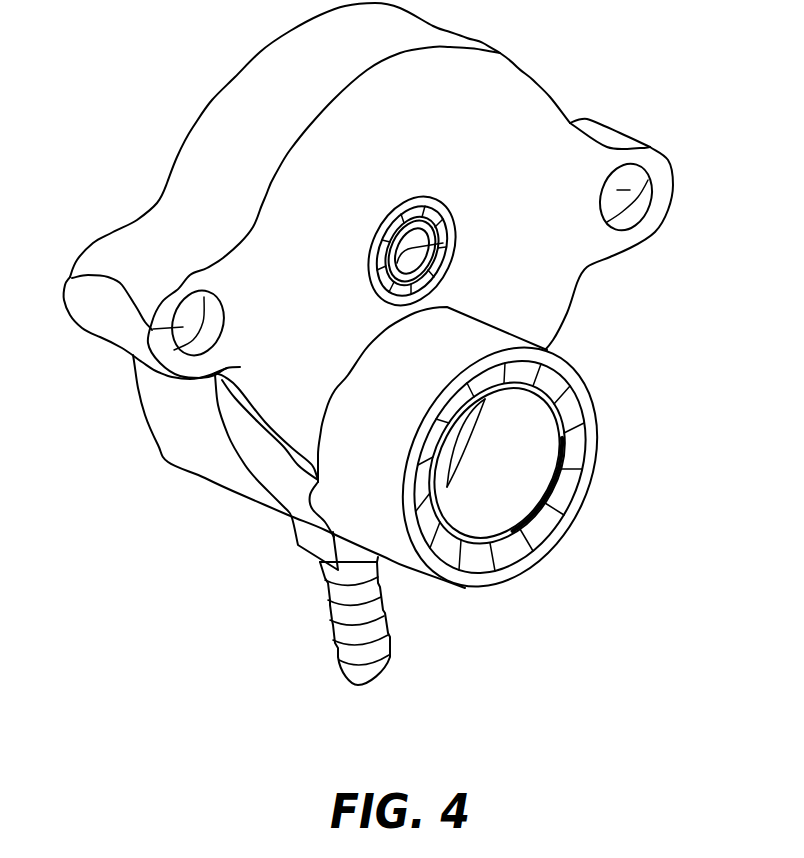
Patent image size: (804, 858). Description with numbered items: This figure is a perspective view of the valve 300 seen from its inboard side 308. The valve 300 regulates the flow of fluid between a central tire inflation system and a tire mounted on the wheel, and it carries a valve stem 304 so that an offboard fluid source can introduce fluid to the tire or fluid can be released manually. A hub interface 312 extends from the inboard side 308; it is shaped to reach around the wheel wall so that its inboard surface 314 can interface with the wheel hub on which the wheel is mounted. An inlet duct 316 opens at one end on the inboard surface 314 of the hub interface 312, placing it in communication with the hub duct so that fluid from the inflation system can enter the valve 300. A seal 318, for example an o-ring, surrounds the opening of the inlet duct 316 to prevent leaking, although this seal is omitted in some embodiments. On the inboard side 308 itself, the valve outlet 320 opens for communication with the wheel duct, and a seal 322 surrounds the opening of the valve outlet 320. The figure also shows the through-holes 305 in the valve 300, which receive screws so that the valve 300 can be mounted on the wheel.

The valve 300 is at (168, 56).
The valve stem 304 is at (375, 673).
The through-holes 305 is at (650, 147).
The inboard side 308 is at (488, 98).
The hub interface 312 is at (377, 417).
The inboard surface 314 is at (493, 537).
The inlet duct 316 is at (527, 470).
The seal 318 is at (583, 392).
The valve outlet 320 is at (450, 220).
The seal 322 is at (398, 208).